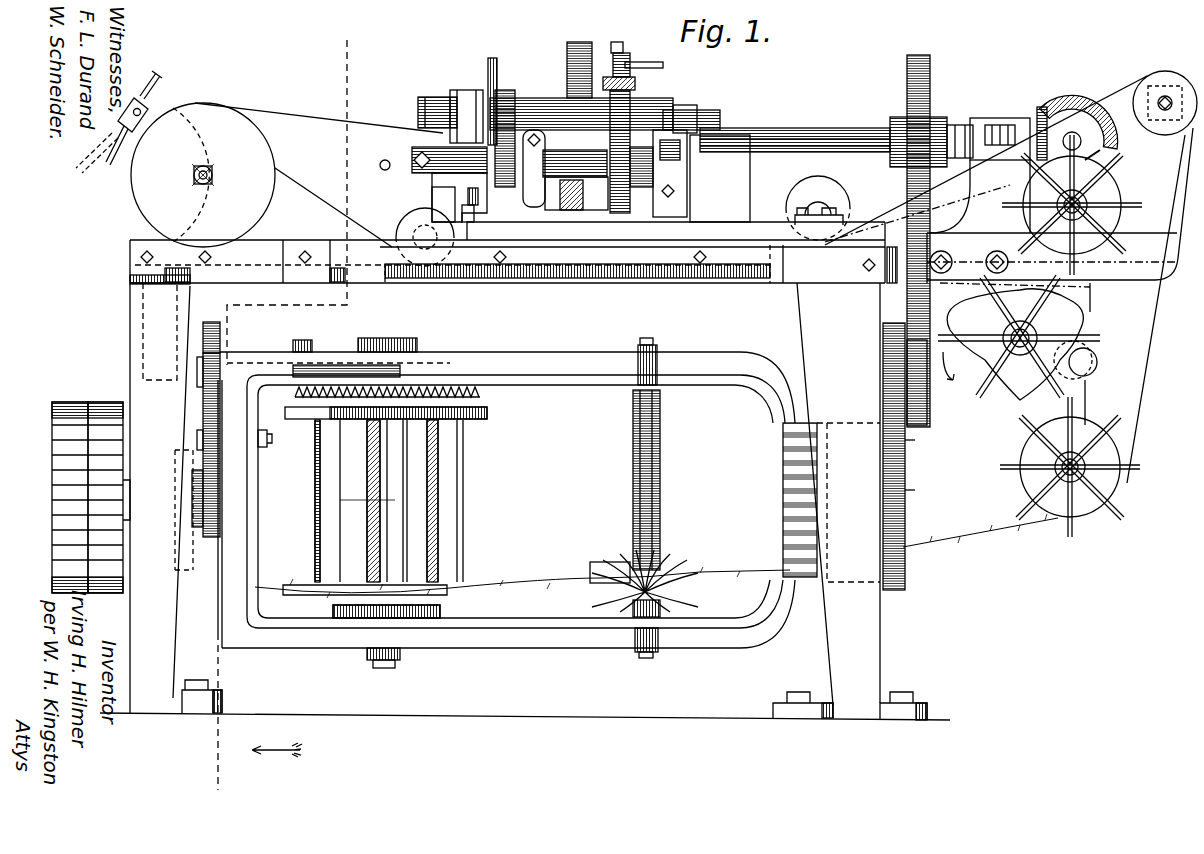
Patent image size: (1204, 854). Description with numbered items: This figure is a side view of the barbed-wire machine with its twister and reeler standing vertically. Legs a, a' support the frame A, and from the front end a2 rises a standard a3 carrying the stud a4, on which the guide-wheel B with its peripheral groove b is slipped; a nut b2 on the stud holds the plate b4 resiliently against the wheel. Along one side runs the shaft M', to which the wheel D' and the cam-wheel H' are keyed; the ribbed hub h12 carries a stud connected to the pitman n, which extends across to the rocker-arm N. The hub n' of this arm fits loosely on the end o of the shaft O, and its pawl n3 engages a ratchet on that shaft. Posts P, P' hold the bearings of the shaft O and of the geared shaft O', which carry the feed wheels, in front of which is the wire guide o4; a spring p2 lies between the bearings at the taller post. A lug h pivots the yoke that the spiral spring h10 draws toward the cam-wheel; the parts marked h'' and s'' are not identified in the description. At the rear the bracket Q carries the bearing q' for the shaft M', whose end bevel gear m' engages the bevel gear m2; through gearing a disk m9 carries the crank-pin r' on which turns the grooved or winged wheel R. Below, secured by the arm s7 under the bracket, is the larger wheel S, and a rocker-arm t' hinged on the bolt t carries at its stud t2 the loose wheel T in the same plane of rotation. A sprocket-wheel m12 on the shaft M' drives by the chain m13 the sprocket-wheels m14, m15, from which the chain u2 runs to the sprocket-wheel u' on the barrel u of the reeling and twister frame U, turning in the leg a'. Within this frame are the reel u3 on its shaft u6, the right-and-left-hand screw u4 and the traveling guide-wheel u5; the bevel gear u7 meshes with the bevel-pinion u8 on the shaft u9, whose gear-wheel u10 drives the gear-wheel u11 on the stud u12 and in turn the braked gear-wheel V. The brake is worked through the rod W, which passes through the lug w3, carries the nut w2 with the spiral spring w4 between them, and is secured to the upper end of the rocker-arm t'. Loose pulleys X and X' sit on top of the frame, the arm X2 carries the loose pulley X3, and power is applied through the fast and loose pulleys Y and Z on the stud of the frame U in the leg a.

The frame A is at (525, 261).
The leg a is at (167, 476).
The leg a' is at (834, 494).
The front end of frame a2 is at (132, 243).
The standard a3 is at (122, 122).
The stud a4 is at (214, 180).
The guide-wheel B is at (287, 175).
The peripheral groove b is at (290, 411).
The nut b2 is at (214, 170).
The plate b4 is at (196, 170).
The rod W is at (382, 255).
The nut w2 is at (405, 307).
The lug w3 is at (805, 263).
The spiral spring w4 is at (670, 307).
The loose pulley Z is at (70, 485).
The fast pulley Y is at (109, 485).
The gear-wheel V is at (215, 492).
The reeling and twister frame U is at (516, 501).
The barrel u is at (786, 500).
The sprocket-wheel u' is at (916, 486).
The sprocket-chain u2 is at (923, 440).
The reel u3 is at (452, 516).
The right-and-left-hand screw u4 is at (660, 512).
The traveling guide-wheel u5 is at (668, 570).
The reel shaft u6 is at (397, 514).
The bevel gear-wheel u7 is at (295, 398).
The bevel-pinion u8 is at (306, 348).
The shaft u9 is at (300, 376).
The gear-wheel u10 is at (224, 337).
The gear-wheel u11 is at (221, 445).
The stud u12 is at (276, 438).
The pitman n is at (437, 153).
The hub n' is at (431, 163).
The pawl n3 is at (475, 213).
The rocker-arm N is at (459, 197).
The shaft end o is at (393, 167).
The shaft O is at (575, 163).
The shaft O' is at (534, 187).
The barbing-wire guide o4 is at (685, 125).
The loose pulley X is at (421, 231).
The loose pulley X' is at (803, 208).
The arm X2 is at (1140, 278).
The loose pulley X3 is at (1172, 65).
The wheel D' is at (579, 58).
The spring p2 is at (581, 114).
The lug h is at (641, 167).
The spiral spring h10 is at (675, 190).
The hub h12 is at (443, 100).
The cam-wheel H' is at (465, 98).
The blade h'' is at (500, 98).
The post P is at (581, 193).
The post P' is at (515, 148).
The shaft M' is at (795, 129).
The bevel gear-wheel m' is at (1033, 124).
The bevel gear-wheel m2 is at (1079, 113).
The disk m9 is at (1105, 163).
The sprocket-wheel m12 is at (951, 122).
The sprocket-chain m13 is at (905, 185).
The sprocket-wheel m14 is at (932, 382).
The sprocket-wheel m15 is at (883, 360).
The bearing q' is at (1000, 141).
The bracket Q is at (980, 196).
The wheel R is at (1072, 205).
The crank-pin r' is at (1094, 208).
The wheel S is at (1019, 337).
The arm s7 is at (985, 323).
The roller s'' is at (1093, 360).
The bolt t is at (1098, 395).
The rocker-arm t' is at (1099, 344).
The stud t2 is at (1090, 466).
The loose wheel T is at (1020, 465).